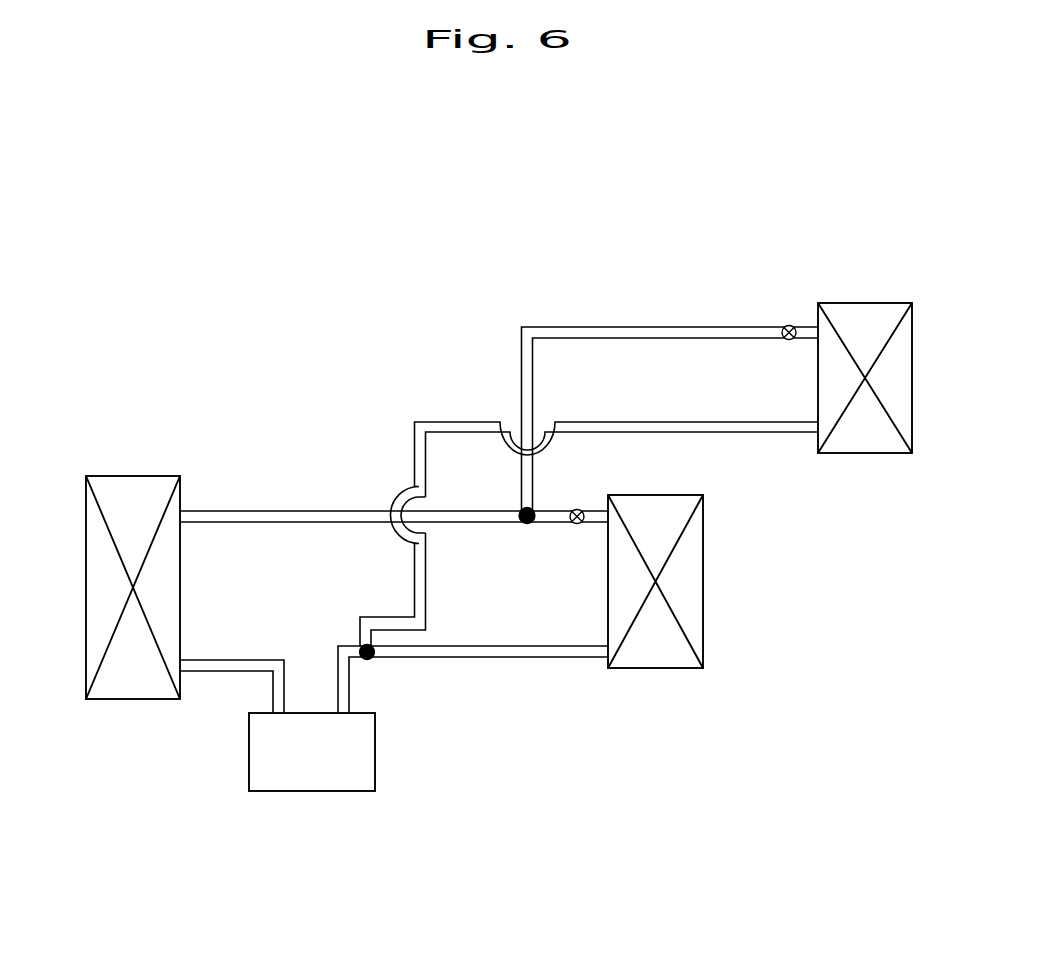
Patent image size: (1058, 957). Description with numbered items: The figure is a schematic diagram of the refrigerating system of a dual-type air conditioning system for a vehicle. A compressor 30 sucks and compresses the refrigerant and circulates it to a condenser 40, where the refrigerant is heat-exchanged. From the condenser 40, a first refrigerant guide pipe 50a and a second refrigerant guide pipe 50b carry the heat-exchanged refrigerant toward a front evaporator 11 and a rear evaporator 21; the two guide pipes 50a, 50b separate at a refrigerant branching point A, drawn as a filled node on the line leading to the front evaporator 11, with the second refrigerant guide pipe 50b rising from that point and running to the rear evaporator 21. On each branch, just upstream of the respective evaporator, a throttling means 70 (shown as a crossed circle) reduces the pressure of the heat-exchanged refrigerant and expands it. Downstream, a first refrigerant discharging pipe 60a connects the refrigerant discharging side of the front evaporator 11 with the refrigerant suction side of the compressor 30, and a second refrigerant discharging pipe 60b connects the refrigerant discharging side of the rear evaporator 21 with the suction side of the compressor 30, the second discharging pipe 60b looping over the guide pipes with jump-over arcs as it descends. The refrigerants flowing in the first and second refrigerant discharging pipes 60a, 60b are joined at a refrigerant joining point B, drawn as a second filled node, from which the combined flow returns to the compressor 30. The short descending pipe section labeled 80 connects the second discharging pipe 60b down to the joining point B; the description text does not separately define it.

The front evaporator 11 is at (652, 668).
The rear evaporator 21 is at (866, 455).
The compressor 30 is at (375, 750).
The condenser 40 is at (130, 700).
The first refrigerant guide pipe 50a is at (282, 511).
The second refrigerant guide pipe 50b is at (667, 327).
The first refrigerant discharging pipe 60a is at (543, 658).
The second refrigerant discharging pipe 60b is at (461, 422).
The throttling means 70 is at (580, 510).
The bypass pipe 80 is at (388, 617).
The refrigerant branching point A is at (527, 523).
The refrigerant joining point B is at (375, 662).